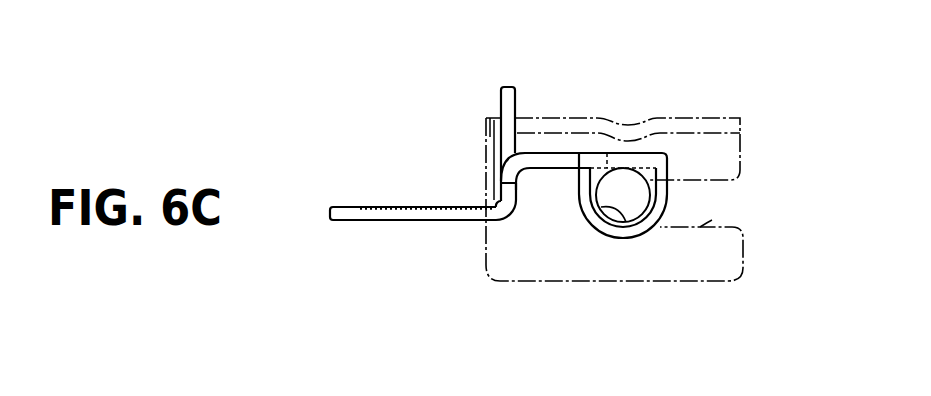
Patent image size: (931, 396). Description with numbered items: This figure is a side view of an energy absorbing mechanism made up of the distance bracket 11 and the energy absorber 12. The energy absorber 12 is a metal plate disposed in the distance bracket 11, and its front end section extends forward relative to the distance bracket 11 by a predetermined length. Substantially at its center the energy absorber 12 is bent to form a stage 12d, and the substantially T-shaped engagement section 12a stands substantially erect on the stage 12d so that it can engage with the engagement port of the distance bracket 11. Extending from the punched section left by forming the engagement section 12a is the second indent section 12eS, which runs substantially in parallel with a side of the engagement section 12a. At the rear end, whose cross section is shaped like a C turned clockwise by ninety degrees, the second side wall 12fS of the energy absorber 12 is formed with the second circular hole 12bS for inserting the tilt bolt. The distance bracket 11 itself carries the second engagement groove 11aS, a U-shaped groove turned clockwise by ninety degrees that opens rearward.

The distance bracket 11 is at (668, 104).
The second engagement groove 11aS is at (706, 222).
The energy absorber 12 is at (439, 200).
The engagement section 12a is at (505, 86).
The stage 12d is at (512, 210).
The second indent section 12eS is at (383, 205).
The second side wall 12fS is at (655, 202).
The second circular hole 12bS is at (623, 218).